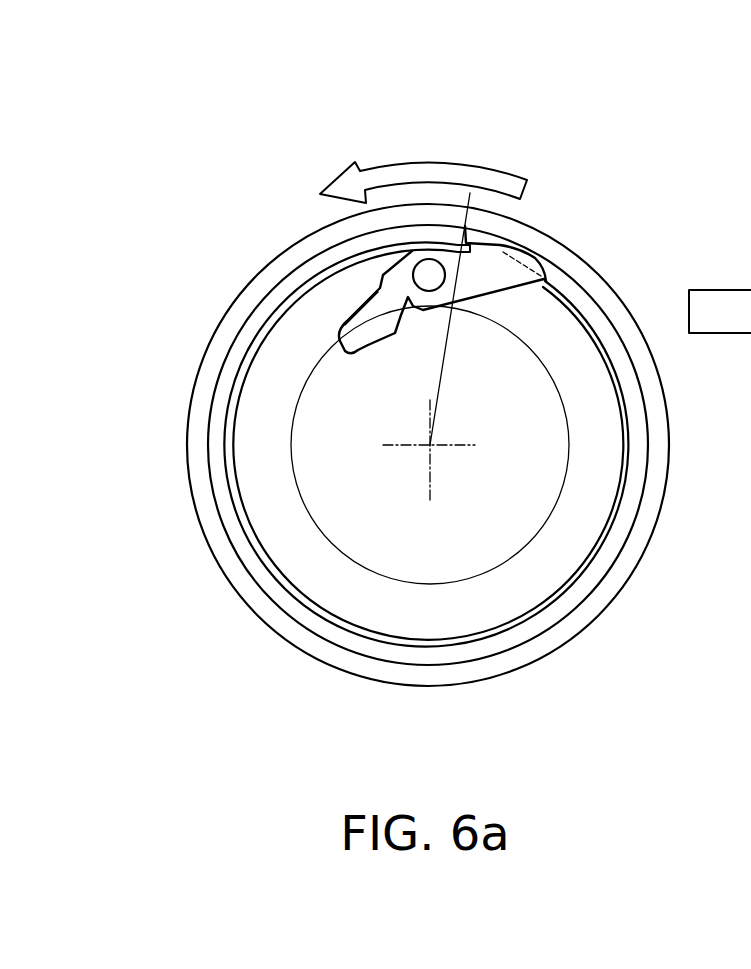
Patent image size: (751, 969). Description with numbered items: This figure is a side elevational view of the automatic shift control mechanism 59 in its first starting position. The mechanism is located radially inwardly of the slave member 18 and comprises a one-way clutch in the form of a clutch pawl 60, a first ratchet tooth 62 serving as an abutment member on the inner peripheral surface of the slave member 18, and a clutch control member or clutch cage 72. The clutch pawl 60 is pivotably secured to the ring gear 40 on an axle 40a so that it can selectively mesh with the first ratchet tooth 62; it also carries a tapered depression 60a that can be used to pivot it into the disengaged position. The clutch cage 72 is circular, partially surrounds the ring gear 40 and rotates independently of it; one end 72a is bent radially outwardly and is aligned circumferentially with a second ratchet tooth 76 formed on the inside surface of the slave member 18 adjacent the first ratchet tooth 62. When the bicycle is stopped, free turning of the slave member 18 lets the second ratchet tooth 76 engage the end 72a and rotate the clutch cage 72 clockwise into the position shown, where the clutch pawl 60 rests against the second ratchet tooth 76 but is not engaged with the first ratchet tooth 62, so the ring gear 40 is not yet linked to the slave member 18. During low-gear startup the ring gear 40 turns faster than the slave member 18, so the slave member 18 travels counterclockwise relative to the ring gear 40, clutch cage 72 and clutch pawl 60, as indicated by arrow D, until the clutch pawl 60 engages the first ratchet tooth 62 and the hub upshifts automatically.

The slave member 18 is at (588, 263).
The clutch cage 72 is at (630, 449).
The end of clutch cage 72a is at (545, 240).
The ring gear 40 is at (552, 573).
The axle 40a is at (428, 272).
The first ratchet tooth 62 is at (470, 242).
The clutch pawl 60 is at (522, 254).
The tapered depression 60a is at (354, 340).
The second ratchet tooth 76 is at (536, 250).
The arrow D is at (435, 162).
The automatic shift control mechanism 59 is at (242, 251).